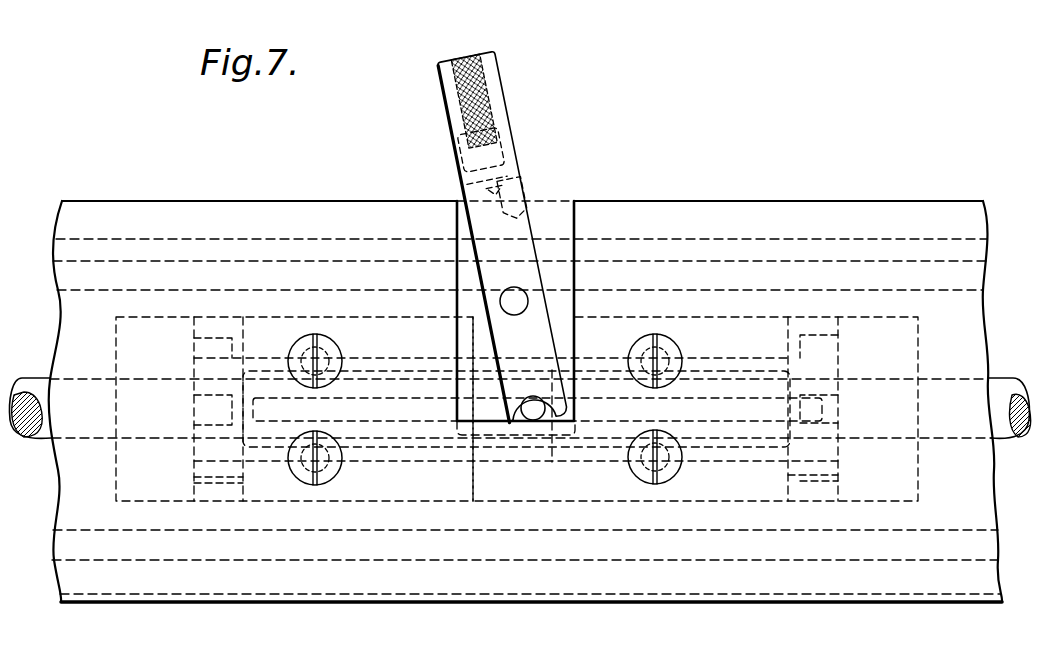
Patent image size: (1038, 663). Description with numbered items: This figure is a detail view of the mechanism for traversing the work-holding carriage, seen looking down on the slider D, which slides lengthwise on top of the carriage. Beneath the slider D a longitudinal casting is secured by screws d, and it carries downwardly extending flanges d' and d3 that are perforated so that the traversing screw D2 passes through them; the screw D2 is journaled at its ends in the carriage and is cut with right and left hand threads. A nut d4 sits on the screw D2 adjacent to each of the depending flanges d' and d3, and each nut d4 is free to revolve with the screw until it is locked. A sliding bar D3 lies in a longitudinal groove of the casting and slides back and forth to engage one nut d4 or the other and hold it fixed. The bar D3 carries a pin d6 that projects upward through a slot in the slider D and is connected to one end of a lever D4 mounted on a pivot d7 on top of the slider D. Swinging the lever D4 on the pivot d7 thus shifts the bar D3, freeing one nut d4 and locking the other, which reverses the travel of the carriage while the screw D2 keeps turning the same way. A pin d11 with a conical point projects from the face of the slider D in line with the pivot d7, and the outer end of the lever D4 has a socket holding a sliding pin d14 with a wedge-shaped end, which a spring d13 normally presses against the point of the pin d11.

The slider D is at (525, 401).
The traversing screw D2 is at (996, 379).
The sliding bar D3 is at (515, 311).
The lever D4 is at (453, 161).
The screws d is at (492, 409).
The downwardly extending flange d' is at (294, 409).
The downwardly extending flange d3 is at (695, 409).
The nut d4 is at (233, 480).
The pin d6 is at (534, 397).
The pivot d7 is at (513, 305).
The pin d11 is at (518, 196).
The spring d13 is at (505, 95).
The sliding pin d14 is at (511, 143).